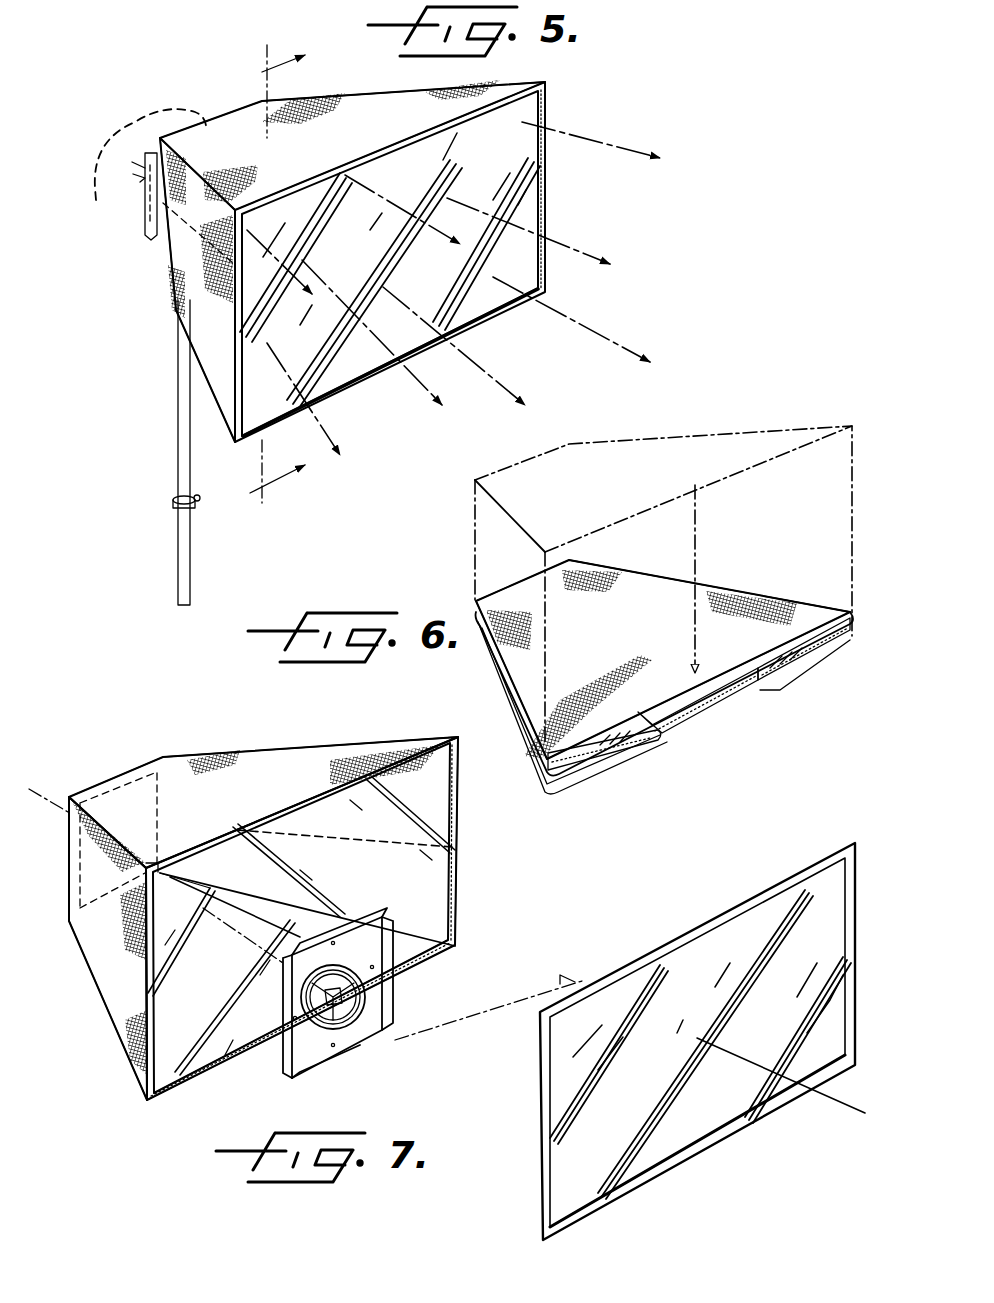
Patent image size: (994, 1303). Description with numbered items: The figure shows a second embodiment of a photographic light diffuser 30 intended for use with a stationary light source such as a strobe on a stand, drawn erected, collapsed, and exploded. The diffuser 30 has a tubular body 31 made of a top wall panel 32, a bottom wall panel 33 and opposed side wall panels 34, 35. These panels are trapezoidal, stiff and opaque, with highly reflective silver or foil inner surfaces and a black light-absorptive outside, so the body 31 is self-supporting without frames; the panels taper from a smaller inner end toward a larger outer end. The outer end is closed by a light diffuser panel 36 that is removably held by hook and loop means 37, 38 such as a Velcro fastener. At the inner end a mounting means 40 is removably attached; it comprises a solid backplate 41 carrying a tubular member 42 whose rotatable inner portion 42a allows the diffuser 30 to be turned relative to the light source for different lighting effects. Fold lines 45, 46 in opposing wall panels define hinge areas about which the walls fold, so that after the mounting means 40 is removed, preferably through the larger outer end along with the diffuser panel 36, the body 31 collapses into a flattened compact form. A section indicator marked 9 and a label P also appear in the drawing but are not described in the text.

In FIG. 5, the light diffuser 30 is at (172, 297).
In FIG. 6, the light diffuser 30 is at (748, 578).
In FIG. 7, the light diffuser 30 is at (288, 742).
In FIG. 5, the tubular body 31 is at (235, 136).
In FIG. 6, the tubular body 31 is at (778, 612).
In FIG. 7, the tubular body 31 is at (122, 1071).
In FIG. 5, the top wall panel 32 is at (336, 158).
In FIG. 7, the top wall panel 32 is at (226, 810).
In FIG. 6, the bottom wall panel 33 is at (719, 681).
In FIG. 7, the bottom wall panel 33 is at (218, 983).
In FIG. 6, the side wall panel 34 is at (790, 642).
In FIG. 7, the side wall panel 34 is at (390, 890).
In FIG. 6, the side wall panel 35 is at (622, 744).
In FIG. 7, the side wall panel 35 is at (116, 999).
In FIG. 5, the light diffuser panel 36 is at (523, 187).
In FIG. 7, the light diffuser panel 36 is at (742, 1118).
In FIG. 6, the hook and loop means 37 is at (658, 741).
In FIG. 7, the hook and loop means 37 is at (458, 930).
In FIG. 7, the hook and loop means 38 is at (541, 1149).
In FIG. 7, the mounting means 40 is at (351, 1005).
In FIG. 7, the backplate 41 is at (305, 1062).
In FIG. 7, the tubular member 42 is at (312, 1003).
In FIG. 7, the rotatable inner portion 42a is at (345, 995).
In FIG. 7, the fold line 45 is at (340, 832).
In FIG. 7, the fold line 46 is at (108, 918).
In FIG. 5, the section line 9- 9 is at (266, 287).
In FIG. 5, the pole P is at (149, 357).